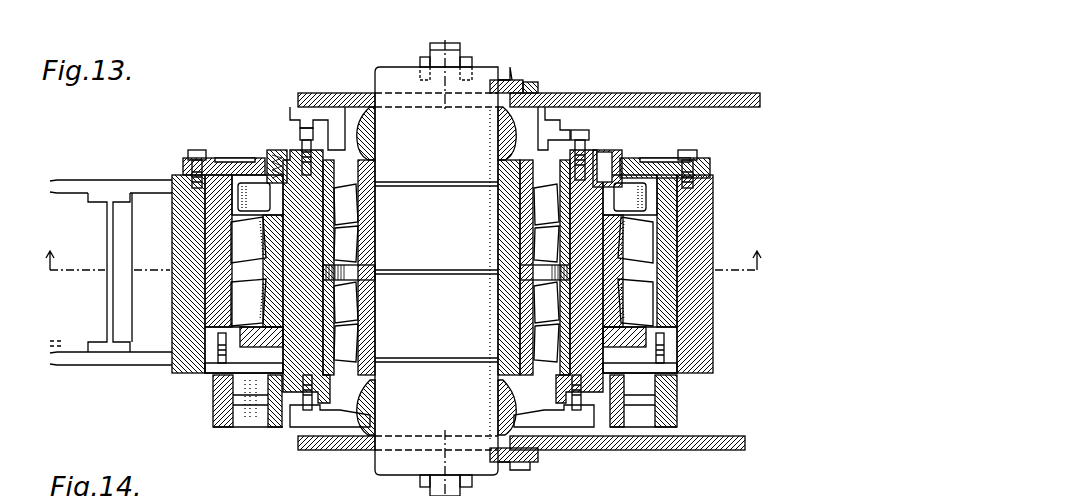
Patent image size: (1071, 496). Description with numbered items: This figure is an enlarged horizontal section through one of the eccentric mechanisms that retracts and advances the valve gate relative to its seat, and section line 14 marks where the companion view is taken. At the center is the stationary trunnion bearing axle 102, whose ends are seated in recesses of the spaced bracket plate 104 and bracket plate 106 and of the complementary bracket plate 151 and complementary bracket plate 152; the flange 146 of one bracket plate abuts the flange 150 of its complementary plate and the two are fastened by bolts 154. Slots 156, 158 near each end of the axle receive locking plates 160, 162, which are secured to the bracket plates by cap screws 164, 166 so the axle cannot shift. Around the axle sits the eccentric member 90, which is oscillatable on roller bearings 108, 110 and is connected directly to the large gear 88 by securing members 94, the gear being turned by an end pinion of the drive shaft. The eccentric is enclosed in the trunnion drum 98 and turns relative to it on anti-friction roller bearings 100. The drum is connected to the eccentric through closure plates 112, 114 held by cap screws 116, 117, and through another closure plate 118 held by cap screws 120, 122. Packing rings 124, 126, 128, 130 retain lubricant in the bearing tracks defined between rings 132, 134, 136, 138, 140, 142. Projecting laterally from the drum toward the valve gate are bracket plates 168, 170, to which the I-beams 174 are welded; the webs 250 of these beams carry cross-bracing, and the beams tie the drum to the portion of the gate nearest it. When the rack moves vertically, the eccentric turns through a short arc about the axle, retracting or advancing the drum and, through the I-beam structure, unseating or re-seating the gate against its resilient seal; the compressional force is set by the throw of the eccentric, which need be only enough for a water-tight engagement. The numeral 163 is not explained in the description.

The section line 14 is at (51, 247).
The large gear 88 is at (215, 426).
The eccentric member 90 is at (605, 150).
The securing members 94 is at (310, 430).
The trunnion drum 98 is at (700, 350).
The anti-friction roller bearings 100 is at (185, 235).
The stationary trunnion bearing axle 102 is at (382, 489).
The bracket plate 104 is at (720, 450).
The bracket plate 106 is at (700, 93).
The roller bearing 108 is at (370, 205).
The roller bearing 110 is at (368, 296).
The closure plate 112 is at (235, 158).
The closure plate 114 is at (565, 130).
The cap screws 116 is at (190, 153).
The cap screws 117 is at (305, 128).
The closure plate 118 is at (225, 395).
The cap screws 120 is at (215, 370).
The cap screws 122 is at (290, 410).
The packing ring 124 is at (270, 400).
The packing ring 126 is at (275, 150).
The packing ring 128 is at (365, 435).
The packing ring 130 is at (505, 140).
The ring 132 is at (215, 250).
The ring 134 is at (240, 300).
The ring 136 is at (358, 256).
The ring 138 is at (358, 238).
The ring 140 is at (358, 313).
The ring 142 is at (358, 336).
The flange 146 is at (455, 43).
The flange 150 is at (440, 45).
The complementary bracket plate 151 is at (330, 450).
The complementary bracket plate 152 is at (320, 93).
The bolts 154 is at (468, 58).
The slot 156 is at (495, 452).
The slot 158 is at (505, 80).
The locking plate 160 is at (520, 465).
The locking plate 162 is at (520, 92).
The lower washer 163 is at (480, 478).
The cap screws 164 is at (505, 476).
The cap screws 166 is at (532, 84).
The bracket plate 168 is at (90, 360).
The bracket plate 170 is at (114, 180).
The I-beams 174 is at (60, 356).
The web 250 is at (107, 296).